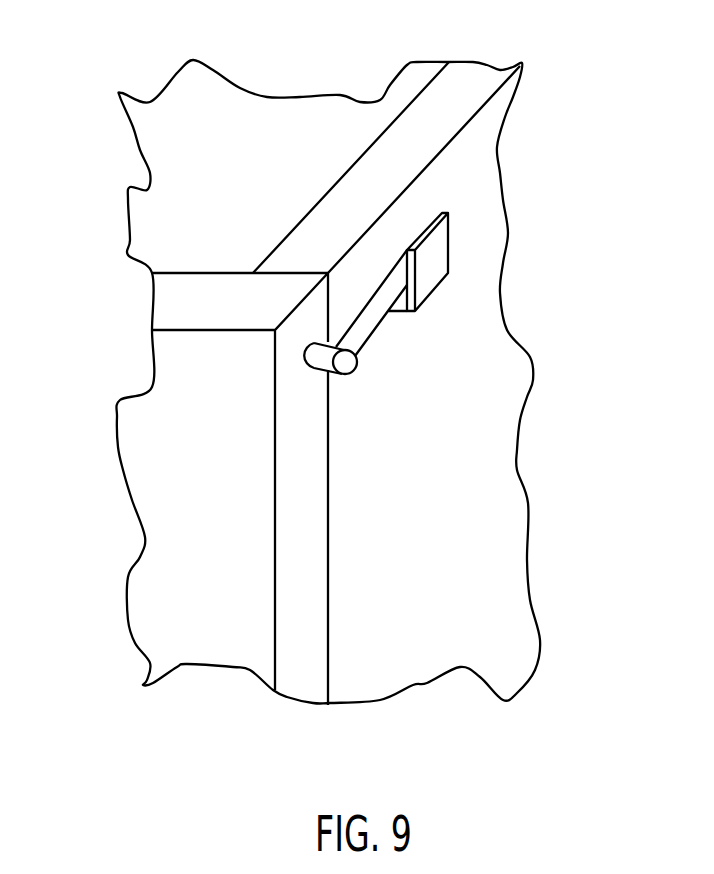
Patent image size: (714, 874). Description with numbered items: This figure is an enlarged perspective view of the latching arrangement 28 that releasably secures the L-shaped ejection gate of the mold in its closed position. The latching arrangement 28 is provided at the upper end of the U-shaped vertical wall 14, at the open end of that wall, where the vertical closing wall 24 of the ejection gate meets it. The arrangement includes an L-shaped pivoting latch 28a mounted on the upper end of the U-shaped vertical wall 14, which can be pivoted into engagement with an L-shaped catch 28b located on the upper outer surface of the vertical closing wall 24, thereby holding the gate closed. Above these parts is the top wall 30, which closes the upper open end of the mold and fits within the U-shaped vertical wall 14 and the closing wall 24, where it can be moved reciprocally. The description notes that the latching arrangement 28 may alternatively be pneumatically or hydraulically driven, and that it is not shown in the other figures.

The U-shaped vertical wall 14 is at (145, 468).
The vertical closing wall 24 is at (480, 157).
The latching arrangement 28 is at (373, 383).
The L-shaped pivoting latch 28a is at (362, 332).
The L-shaped catch 28b is at (440, 262).
The top wall 30 is at (325, 103).